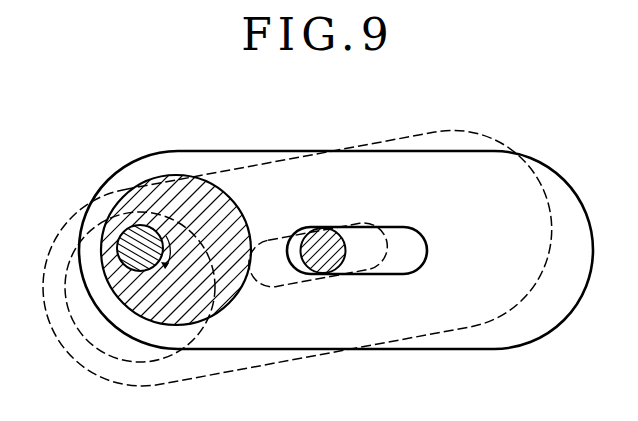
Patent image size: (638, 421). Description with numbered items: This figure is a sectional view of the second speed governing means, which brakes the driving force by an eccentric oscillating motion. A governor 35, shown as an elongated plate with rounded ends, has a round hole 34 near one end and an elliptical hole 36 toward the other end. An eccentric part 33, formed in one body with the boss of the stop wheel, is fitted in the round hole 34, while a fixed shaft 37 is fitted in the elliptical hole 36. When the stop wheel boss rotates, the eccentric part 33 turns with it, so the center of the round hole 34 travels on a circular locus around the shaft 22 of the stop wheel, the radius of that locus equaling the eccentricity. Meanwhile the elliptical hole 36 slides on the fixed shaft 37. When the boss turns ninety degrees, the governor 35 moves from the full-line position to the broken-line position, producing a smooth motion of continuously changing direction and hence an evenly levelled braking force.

The shaft of the stop wheel 22 is at (123, 243).
The eccentric part 33 is at (117, 213).
The round hole 34 is at (215, 185).
The governor 35 is at (168, 154).
The elliptical hole 36 is at (400, 228).
The fixed shaft 37 is at (305, 227).